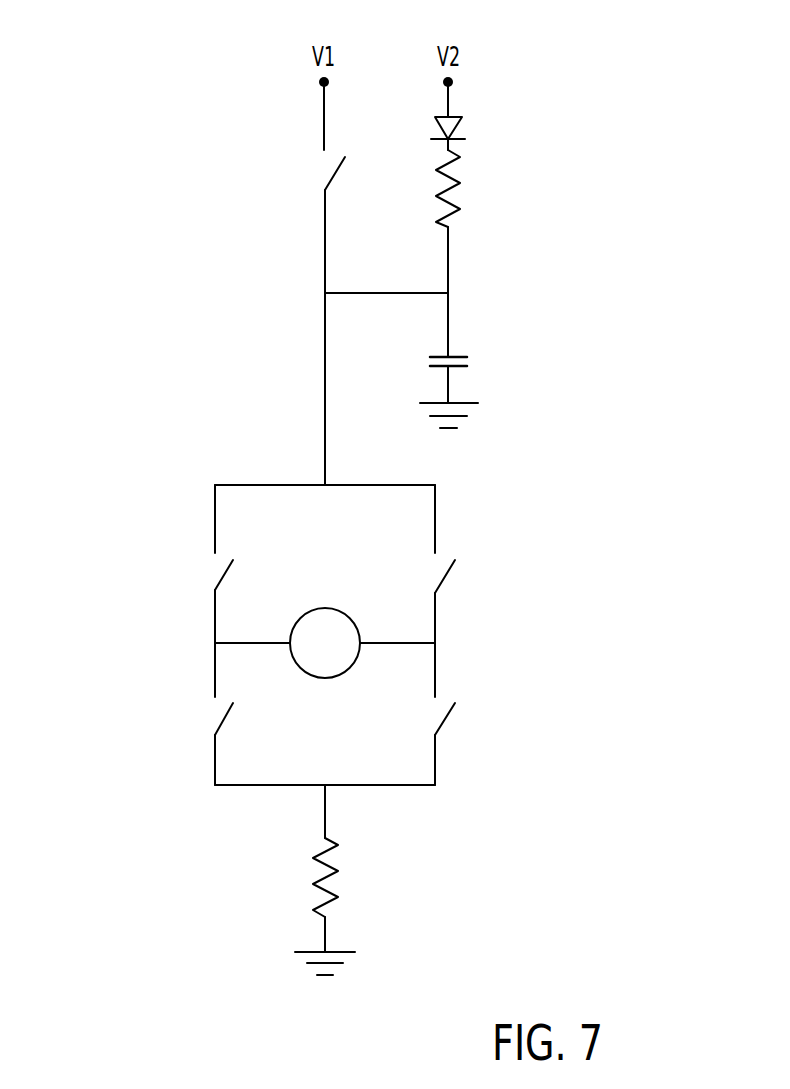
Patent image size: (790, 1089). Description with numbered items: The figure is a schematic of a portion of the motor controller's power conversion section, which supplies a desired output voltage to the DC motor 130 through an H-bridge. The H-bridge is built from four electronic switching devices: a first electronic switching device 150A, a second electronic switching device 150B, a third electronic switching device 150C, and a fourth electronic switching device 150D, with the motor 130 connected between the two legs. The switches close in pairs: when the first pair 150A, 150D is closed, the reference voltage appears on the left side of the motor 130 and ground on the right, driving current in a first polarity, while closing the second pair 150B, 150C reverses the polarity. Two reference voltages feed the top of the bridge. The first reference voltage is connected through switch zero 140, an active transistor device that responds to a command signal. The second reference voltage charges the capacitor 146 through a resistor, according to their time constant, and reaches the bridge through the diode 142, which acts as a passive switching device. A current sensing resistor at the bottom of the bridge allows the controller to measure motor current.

The motor 130 is at (350, 617).
The switch zero 140 is at (305, 157).
The diode 142 is at (472, 120).
The capacitor 146 is at (486, 355).
The first electronic switching device 150A is at (196, 558).
The second electronic switching device 150B is at (474, 552).
The third electronic switching device 150C is at (196, 700).
The fourth electronic switching device 150D is at (474, 695).